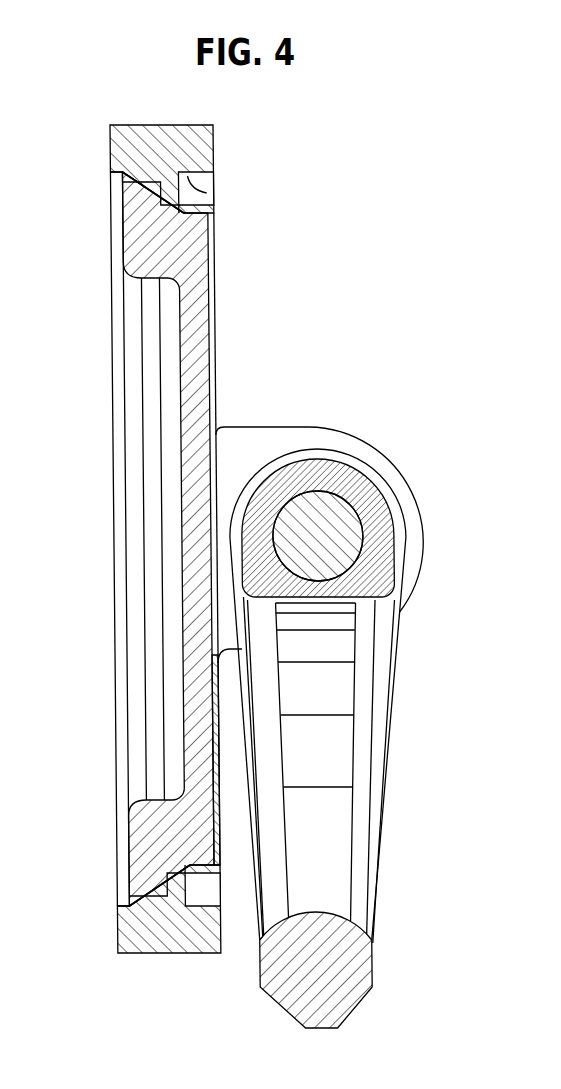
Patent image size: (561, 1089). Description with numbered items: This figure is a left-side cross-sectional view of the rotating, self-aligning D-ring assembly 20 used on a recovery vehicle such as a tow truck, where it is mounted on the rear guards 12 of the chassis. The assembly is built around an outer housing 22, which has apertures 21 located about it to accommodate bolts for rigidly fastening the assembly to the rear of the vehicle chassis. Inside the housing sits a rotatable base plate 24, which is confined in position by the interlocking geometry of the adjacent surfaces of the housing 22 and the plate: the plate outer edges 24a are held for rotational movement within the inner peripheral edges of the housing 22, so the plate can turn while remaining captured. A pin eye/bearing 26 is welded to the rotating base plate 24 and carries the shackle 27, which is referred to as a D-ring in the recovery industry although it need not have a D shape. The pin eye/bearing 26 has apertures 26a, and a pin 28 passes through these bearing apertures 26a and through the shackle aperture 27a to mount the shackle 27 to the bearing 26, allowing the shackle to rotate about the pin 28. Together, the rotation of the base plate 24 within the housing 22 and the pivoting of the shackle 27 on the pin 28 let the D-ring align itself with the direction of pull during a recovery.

The rear guards 12 is at (109, 358).
The D-ring assembly 20 is at (407, 273).
The apertures 21 is at (213, 188).
The outer housing 22 is at (213, 148).
The rotatable base plate 24 is at (212, 349).
The plate outer edges 24a is at (178, 213).
The pin eye/bearing 26 is at (381, 466).
The apertures 26a is at (381, 519).
The shackle 27 is at (381, 814).
The shackle aperture 27a is at (336, 696).
The pin 28 is at (339, 492).